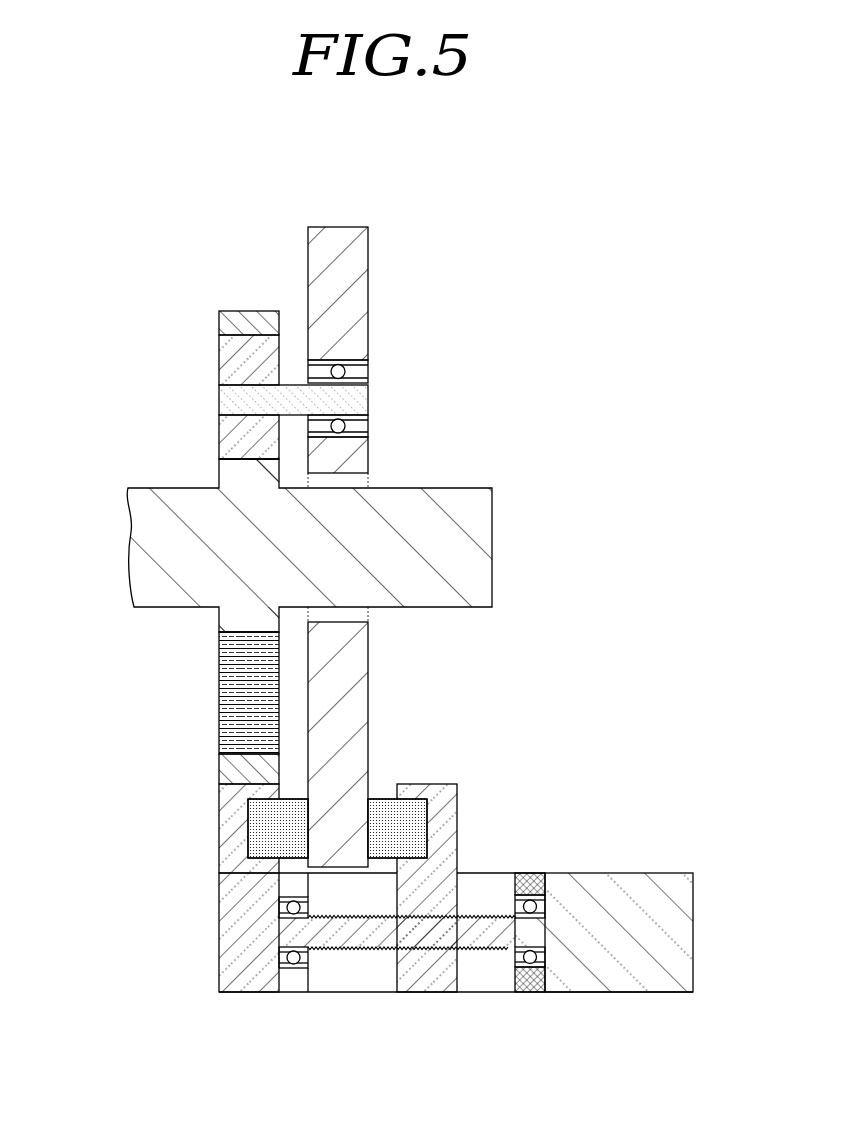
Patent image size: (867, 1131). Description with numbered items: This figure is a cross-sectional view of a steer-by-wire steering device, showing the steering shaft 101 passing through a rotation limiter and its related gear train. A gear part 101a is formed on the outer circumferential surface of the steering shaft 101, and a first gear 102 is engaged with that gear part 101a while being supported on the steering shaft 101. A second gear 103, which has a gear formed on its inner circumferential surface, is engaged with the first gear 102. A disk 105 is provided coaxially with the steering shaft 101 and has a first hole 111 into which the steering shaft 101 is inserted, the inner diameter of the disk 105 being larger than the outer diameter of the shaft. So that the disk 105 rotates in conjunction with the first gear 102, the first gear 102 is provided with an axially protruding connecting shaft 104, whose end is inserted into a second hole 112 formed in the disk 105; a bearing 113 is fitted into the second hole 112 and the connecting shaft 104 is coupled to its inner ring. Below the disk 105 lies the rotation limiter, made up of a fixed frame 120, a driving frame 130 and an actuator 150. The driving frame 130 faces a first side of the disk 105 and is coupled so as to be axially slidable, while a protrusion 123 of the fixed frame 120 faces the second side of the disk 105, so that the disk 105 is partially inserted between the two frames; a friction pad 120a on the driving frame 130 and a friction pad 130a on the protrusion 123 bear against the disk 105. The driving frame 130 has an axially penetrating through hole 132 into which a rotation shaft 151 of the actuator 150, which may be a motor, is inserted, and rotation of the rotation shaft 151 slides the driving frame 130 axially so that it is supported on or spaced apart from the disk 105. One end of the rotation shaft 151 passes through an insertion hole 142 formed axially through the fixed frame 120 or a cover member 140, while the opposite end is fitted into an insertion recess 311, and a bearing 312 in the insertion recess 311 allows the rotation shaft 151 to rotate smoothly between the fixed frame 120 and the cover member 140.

The steering shaft 101 is at (144, 542).
The gear part 101a is at (233, 478).
The first gear 102 is at (228, 432).
The second gear 103 is at (250, 322).
The connecting shaft 104 is at (226, 394).
The disk 105 is at (340, 292).
The first hole 111 is at (358, 482).
The second hole 112 is at (345, 373).
The bearing 113 is at (345, 427).
The fixed frame 120 is at (231, 913).
The friction pad 120a is at (262, 818).
The protrusion 123 is at (234, 830).
The driving frame 130 is at (433, 970).
The friction pad 130a is at (412, 815).
The through hole 132 is at (415, 935).
The cover member 140 is at (525, 876).
The insertion hole 142 is at (547, 957).
The actuator 150 is at (676, 918).
The rotation shaft 151 is at (365, 935).
The insertion recess 311 is at (312, 958).
The bearing 312 is at (293, 970).